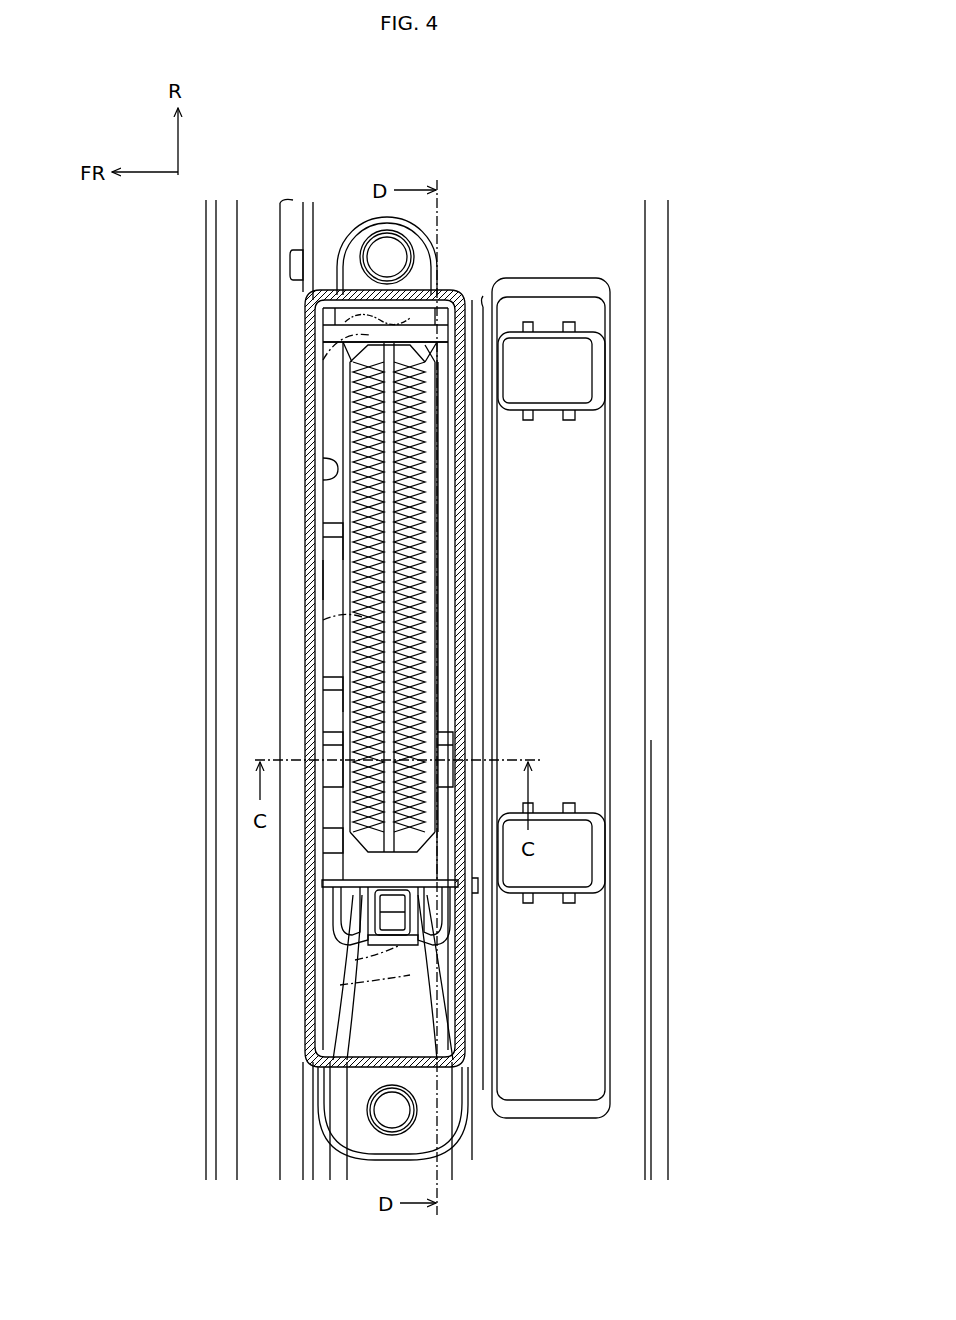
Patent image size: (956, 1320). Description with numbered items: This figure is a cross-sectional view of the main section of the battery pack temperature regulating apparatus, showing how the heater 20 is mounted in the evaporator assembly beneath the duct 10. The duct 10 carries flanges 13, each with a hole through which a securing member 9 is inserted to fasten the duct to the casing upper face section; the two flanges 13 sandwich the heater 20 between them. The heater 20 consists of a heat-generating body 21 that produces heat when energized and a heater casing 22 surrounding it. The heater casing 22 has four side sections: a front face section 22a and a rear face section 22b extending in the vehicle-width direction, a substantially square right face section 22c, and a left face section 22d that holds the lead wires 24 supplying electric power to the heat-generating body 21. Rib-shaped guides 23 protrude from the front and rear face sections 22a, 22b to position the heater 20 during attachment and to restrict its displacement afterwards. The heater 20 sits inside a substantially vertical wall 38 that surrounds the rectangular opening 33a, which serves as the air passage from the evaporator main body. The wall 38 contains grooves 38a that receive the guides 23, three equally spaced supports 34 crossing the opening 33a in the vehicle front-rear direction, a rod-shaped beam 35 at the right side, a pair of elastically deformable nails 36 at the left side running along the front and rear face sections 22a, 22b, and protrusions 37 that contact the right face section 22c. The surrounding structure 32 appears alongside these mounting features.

The securing member 9 is at (387, 257).
The duct 10 is at (464, 288).
The flange 13 is at (420, 238).
The heater 20 is at (336, 430).
The heat-generating body 21 is at (410, 578).
The heater casing 22 is at (505, 867).
The front face section 22a is at (330, 625).
The rear face section 22b is at (432, 628).
The right face section 22c is at (330, 336).
The left face section 22d is at (393, 940).
The guide 23 is at (330, 905).
The lead wire 24 is at (438, 960).
The vehicle body frame 32 is at (198, 946).
The opening 33a is at (335, 592).
The support 34 is at (335, 527).
The beam 35 is at (360, 350).
The nail 36 is at (322, 742).
The protrusion 37 is at (325, 296).
The wall 38 is at (325, 470).
The groove 38a is at (330, 862).